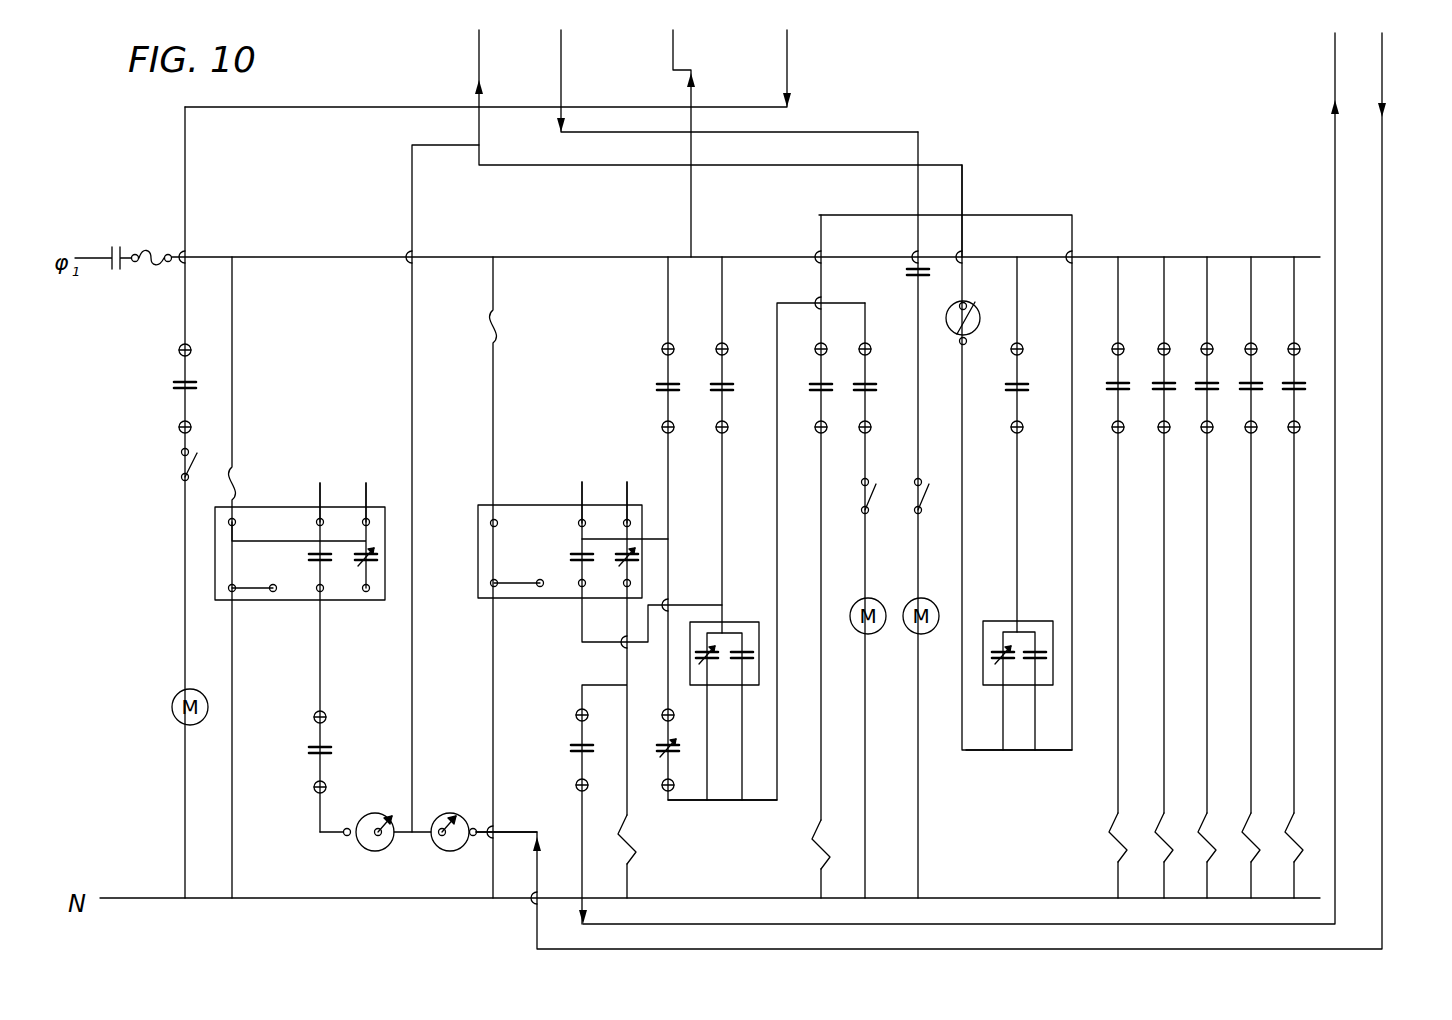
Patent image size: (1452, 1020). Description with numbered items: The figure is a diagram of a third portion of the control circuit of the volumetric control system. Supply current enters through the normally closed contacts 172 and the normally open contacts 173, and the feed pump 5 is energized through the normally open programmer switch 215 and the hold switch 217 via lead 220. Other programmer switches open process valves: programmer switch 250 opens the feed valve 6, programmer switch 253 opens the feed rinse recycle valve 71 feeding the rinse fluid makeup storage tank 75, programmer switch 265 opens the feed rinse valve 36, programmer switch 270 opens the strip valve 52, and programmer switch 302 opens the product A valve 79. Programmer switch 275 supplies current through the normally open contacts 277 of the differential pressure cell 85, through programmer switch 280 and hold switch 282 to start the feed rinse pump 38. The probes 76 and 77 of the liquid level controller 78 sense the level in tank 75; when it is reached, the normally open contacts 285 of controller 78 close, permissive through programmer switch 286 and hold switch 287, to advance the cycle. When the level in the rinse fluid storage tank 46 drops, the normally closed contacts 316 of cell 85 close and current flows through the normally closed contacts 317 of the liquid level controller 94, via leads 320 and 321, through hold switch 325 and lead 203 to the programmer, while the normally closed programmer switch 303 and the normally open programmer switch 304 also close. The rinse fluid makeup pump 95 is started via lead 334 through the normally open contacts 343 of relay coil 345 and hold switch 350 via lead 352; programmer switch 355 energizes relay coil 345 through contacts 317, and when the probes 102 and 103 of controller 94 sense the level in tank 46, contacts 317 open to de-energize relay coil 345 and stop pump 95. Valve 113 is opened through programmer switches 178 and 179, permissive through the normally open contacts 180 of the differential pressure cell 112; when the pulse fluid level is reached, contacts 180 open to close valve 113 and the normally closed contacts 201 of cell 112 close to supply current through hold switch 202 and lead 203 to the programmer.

The feed pump 5 is at (170, 710).
The feed valve 6 is at (1200, 840).
The feed rinse valve 36 is at (1246, 840).
The feed rinse pump 38 is at (854, 634).
The rinse fluid storage tank 46 is at (633, 477).
The strip valve 52 is at (1290, 840).
The feed rinse recycle valve 71 is at (1158, 840).
The rinse fluid makeup storage tank 75 is at (377, 479).
The probe 76 is at (318, 496).
The probe 77 is at (368, 498).
The liquid level controller 78 is at (238, 608).
The product A valve 79 is at (1110, 838).
The differential pressure cell 85 is at (728, 690).
The liquid level controller 94 is at (498, 606).
The rinse fluid makeup pump 95 is at (907, 634).
The probe 102 is at (582, 492).
The probe 103 is at (639, 490).
The differential pressure cell 112 is at (1021, 690).
The valve 113 is at (816, 862).
The normally closed contacts 172 is at (149, 266).
The normally open contacts 173 is at (118, 248).
The programmer switch 178 is at (1006, 388).
The programmer switch 179 is at (810, 388).
The normally open contacts 180 is at (1042, 650).
The normally closed contacts 201 is at (1018, 658).
The hold switch 202 is at (977, 316).
The lead 203 is at (476, 56).
The programmer switch 215 is at (172, 388).
The hold switch 217 is at (180, 464).
The lead 220 is at (187, 165).
The programmer switch 250 is at (1198, 392).
The programmer switch 253 is at (1154, 392).
The programmer switch 265 is at (1242, 392).
The programmer switch 270 is at (1286, 392).
The programmer switch 275 is at (710, 386).
The normally open contacts 277 is at (752, 646).
The programmer switch 280 is at (874, 392).
The hold switch 282 is at (856, 492).
The normally open contacts 285 is at (308, 562).
The programmer switch 286 is at (334, 750).
The hold switch 287 is at (356, 824).
The programmer switch 302 is at (1104, 392).
The programmer switch 303 is at (652, 754).
The programmer switch 304 is at (570, 748).
The normally closed contacts 316 is at (722, 658).
The normally closed contacts 317 is at (610, 558).
The lead 320 is at (1332, 56).
The lead 321 is at (1384, 46).
The hold switch 325 is at (476, 806).
The lead 334 is at (672, 46).
The normally open contacts 343 is at (907, 272).
The relay coil 345 is at (636, 858).
The hold switch 350 is at (908, 492).
The lead 352 is at (558, 70).
The programmer switch 355 is at (656, 380).